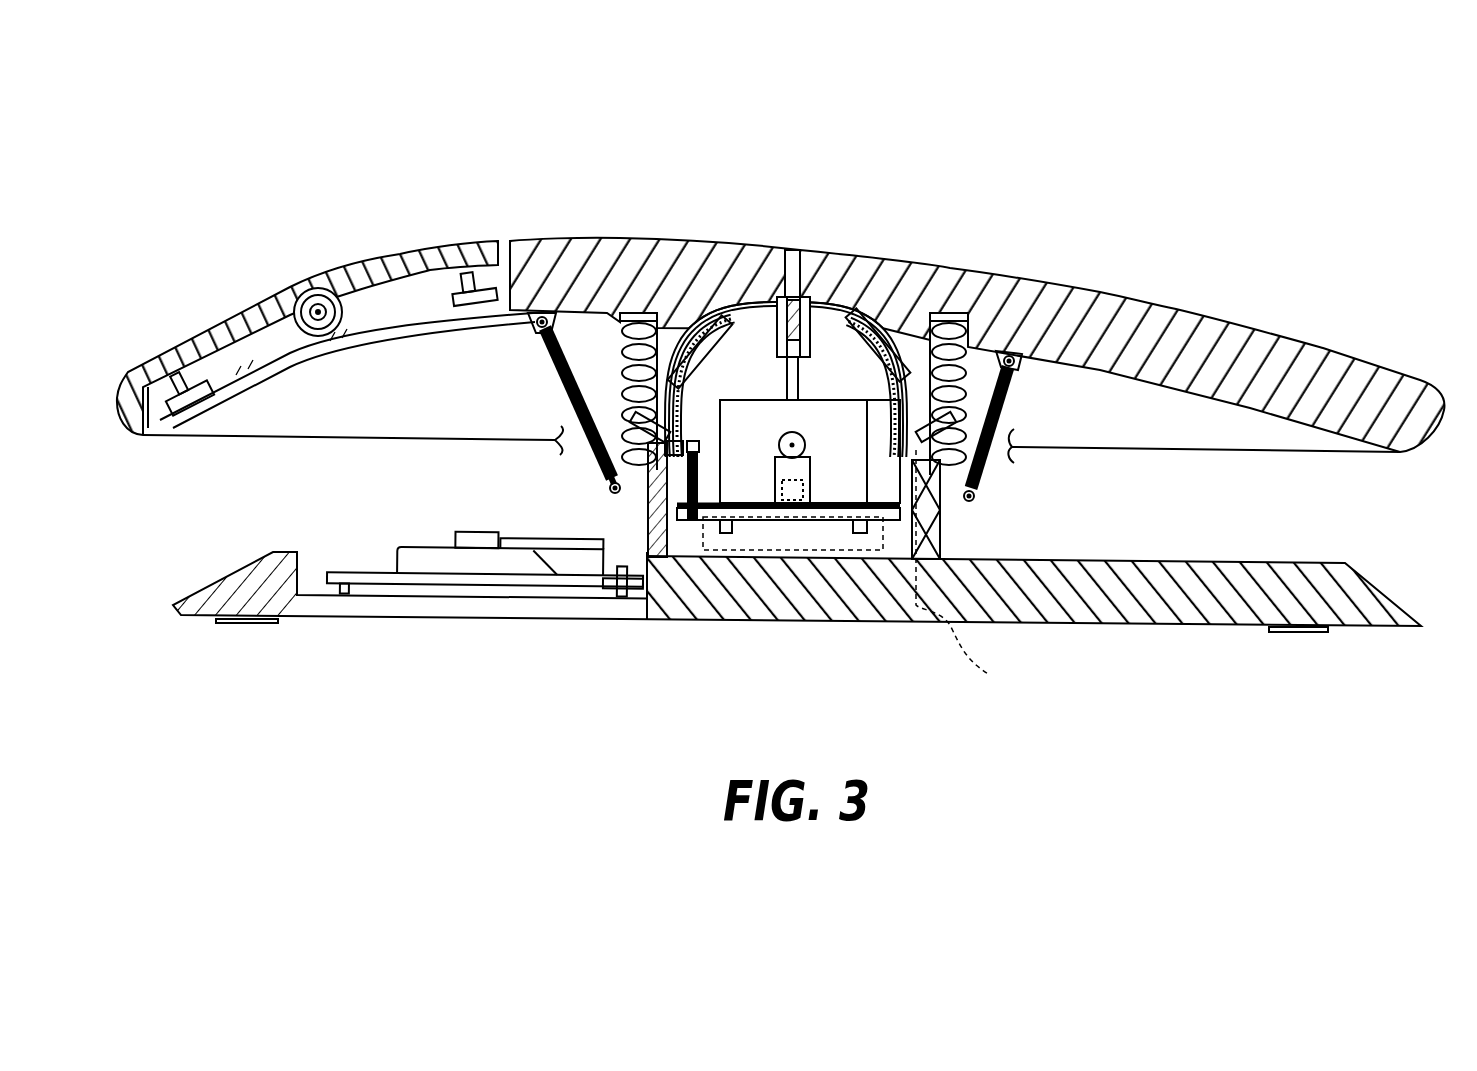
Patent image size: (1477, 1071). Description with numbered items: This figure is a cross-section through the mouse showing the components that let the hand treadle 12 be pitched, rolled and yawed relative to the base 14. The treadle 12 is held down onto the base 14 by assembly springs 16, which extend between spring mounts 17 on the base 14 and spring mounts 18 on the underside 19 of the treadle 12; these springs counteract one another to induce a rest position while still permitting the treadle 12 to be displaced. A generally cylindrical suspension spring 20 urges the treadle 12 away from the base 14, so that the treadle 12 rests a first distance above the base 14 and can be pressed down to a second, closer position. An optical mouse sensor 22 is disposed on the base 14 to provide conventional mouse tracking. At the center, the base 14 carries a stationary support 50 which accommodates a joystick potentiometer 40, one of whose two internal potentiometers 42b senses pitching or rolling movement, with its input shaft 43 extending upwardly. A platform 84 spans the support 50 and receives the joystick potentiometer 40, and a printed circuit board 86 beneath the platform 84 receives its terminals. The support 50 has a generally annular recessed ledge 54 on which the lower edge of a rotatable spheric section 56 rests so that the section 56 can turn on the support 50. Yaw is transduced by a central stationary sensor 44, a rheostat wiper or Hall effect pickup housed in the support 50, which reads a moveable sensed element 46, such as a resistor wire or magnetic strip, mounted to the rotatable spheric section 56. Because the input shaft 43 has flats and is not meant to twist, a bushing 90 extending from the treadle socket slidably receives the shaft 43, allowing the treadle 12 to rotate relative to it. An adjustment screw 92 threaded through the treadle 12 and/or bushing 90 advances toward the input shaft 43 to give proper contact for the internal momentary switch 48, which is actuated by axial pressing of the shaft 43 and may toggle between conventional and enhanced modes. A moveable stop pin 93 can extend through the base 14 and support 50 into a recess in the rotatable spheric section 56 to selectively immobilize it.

The hand treadle 12 is at (1176, 310).
The base 14 is at (1400, 588).
The assembly springs 16 is at (578, 398).
The spring mounts 17 is at (612, 494).
The spring mounts 18 is at (537, 327).
The underside 19 is at (1268, 409).
The suspension spring 20 is at (602, 458).
The optical mouse sensor 22 is at (440, 533).
The joystick potentiometer 40 is at (753, 323).
The potentiometer 42b is at (918, 524).
The input shaft 43 is at (800, 380).
The stationary sensor 44 is at (700, 460).
The moveable sensed element 46 is at (658, 498).
The momentary switch 48 is at (815, 502).
The stationary support 50 is at (943, 498).
The recessed ledge 54 is at (976, 496).
The rotatable spheric section 56 is at (718, 310).
The platform 84 is at (893, 516).
The printed circuit board 86 is at (755, 540).
The bushing 90 is at (758, 393).
The adjustment screw 92 is at (798, 298).
The moveable stop pin 93 is at (971, 571).